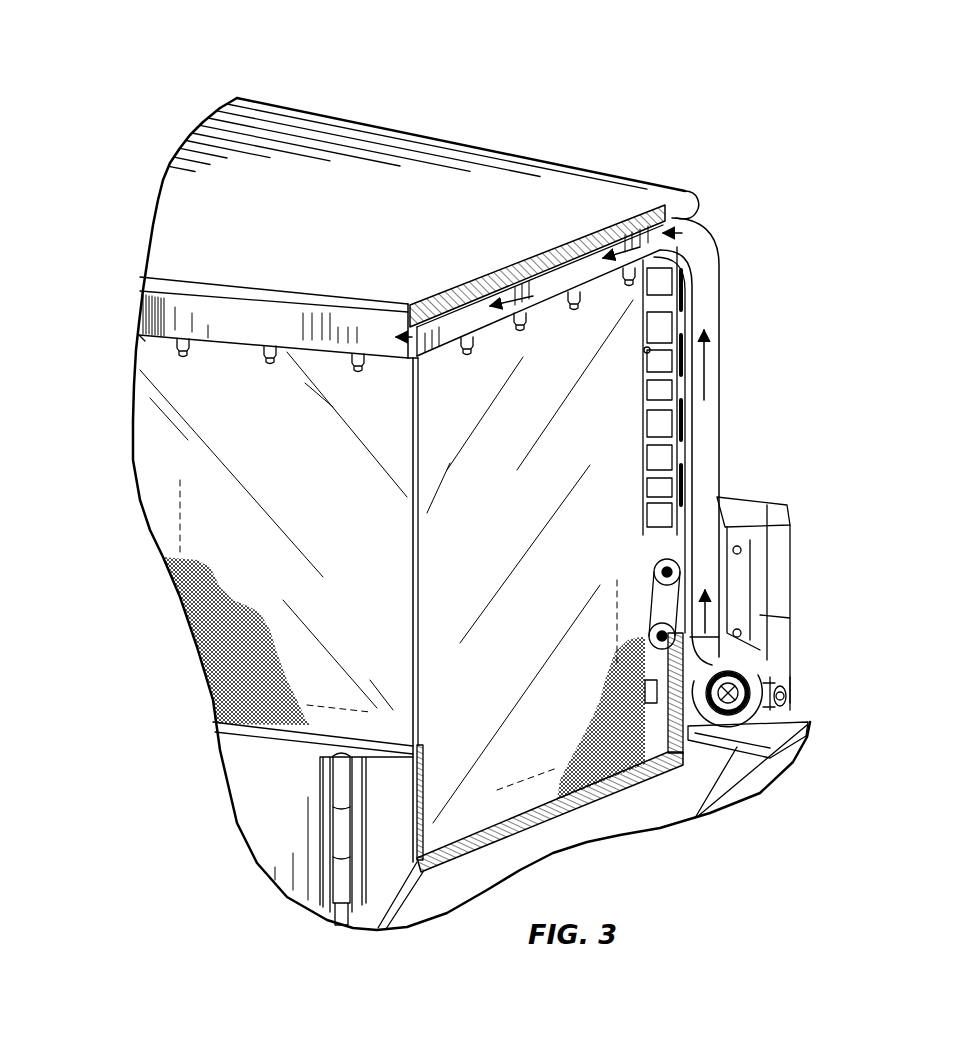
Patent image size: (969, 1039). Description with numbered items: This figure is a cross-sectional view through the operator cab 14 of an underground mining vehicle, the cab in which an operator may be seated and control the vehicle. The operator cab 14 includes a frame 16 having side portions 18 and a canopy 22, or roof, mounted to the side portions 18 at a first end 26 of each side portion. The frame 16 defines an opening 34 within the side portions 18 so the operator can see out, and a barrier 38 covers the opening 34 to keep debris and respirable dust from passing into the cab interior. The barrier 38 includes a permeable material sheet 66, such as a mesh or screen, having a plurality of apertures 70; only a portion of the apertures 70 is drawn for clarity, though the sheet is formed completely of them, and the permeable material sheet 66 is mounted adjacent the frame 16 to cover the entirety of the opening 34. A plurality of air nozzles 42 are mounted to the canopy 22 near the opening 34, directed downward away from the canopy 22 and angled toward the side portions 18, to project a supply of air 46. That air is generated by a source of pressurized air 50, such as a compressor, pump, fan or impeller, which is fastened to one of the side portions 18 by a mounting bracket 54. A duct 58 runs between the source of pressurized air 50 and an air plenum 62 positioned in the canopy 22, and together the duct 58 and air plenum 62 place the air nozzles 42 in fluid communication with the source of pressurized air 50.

The operator cab 14 is at (173, 948).
The frame 16 is at (603, 828).
The side portions 18 is at (303, 877).
The canopy 22 is at (332, 192).
The first end 26 is at (142, 336).
The opening 34 is at (200, 474).
The barrier 38 is at (104, 418).
The air nozzles 42 is at (357, 355).
The supply of air 46 is at (705, 357).
The source of pressurized air 50 is at (747, 693).
The mounting bracket 54 is at (787, 733).
The duct 58 is at (720, 470).
The air plenum 62 is at (453, 320).
The permeable material sheet 66 is at (454, 706).
The apertures 70 is at (227, 638).